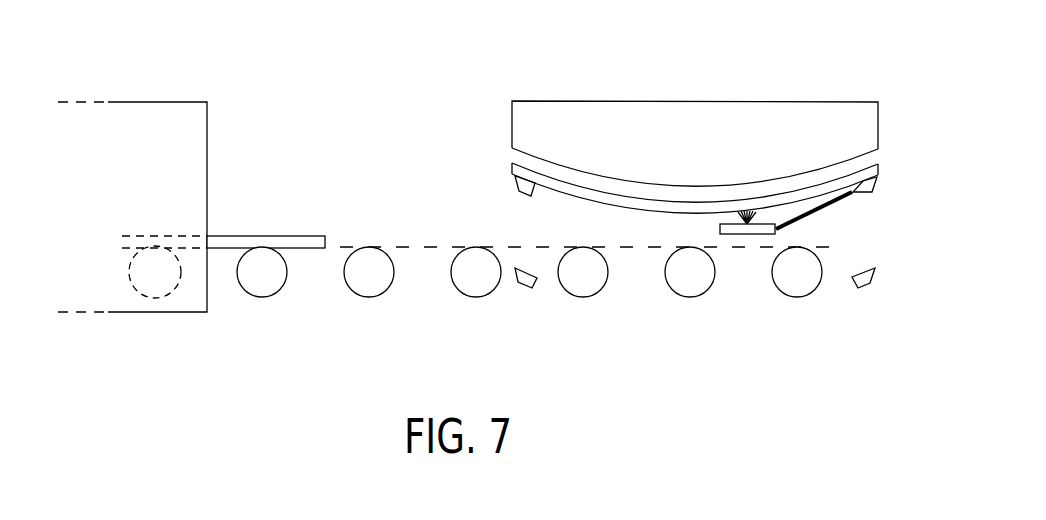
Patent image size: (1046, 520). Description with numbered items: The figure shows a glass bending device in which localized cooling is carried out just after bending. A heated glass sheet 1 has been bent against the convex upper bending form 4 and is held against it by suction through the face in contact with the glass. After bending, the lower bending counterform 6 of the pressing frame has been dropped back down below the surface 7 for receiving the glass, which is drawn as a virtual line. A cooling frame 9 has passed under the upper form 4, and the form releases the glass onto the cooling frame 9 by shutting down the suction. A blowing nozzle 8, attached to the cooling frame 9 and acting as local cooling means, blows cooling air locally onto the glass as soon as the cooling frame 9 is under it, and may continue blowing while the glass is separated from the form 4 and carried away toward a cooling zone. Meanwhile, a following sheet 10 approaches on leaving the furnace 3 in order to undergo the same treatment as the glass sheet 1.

The glass sheet 1 is at (639, 212).
The furnace 3 is at (152, 146).
The upper bending form 4 is at (572, 127).
The lower bending counterform 6 is at (525, 283).
The surface for receiving the sheet 7 is at (420, 240).
The blowing nozzle 8 is at (748, 234).
The cooling frame 9 is at (515, 184).
The sheet 10 is at (269, 228).